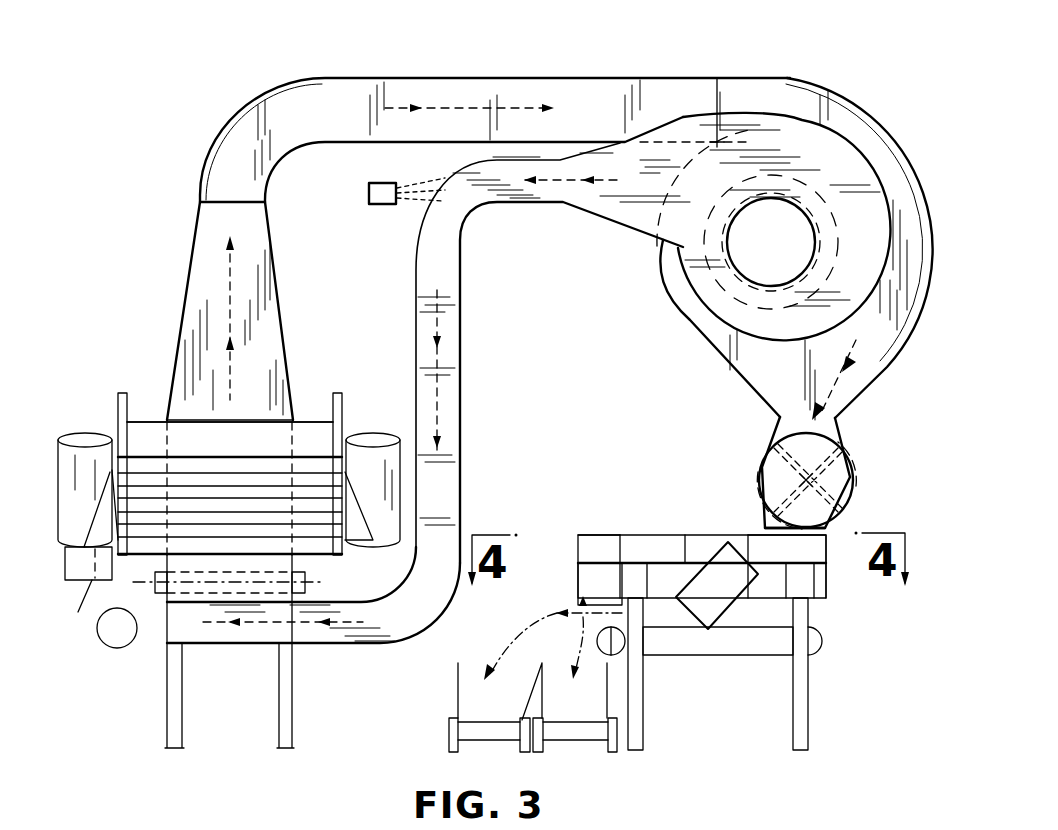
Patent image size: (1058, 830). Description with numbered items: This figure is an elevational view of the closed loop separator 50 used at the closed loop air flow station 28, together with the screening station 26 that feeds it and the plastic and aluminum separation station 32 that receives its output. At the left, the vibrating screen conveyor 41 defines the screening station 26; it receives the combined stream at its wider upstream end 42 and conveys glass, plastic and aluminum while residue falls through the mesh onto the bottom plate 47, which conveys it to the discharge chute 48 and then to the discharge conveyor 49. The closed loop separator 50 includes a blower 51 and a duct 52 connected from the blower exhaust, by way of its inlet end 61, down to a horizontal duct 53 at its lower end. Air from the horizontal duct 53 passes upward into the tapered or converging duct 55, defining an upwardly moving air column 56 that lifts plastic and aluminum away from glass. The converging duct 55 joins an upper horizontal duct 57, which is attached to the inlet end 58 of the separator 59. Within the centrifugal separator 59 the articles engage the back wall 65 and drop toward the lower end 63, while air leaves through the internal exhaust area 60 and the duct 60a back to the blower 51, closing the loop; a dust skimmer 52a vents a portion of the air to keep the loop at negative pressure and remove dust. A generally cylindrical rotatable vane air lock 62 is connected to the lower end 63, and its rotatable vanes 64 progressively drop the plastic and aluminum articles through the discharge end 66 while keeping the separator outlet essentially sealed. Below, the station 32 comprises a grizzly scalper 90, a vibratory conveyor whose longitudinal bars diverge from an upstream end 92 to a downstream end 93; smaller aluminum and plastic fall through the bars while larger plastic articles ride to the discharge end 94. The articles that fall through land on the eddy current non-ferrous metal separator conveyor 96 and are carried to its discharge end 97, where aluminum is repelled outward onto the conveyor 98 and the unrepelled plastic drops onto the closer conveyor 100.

The closed loop separator 50 is at (566, 28).
The upper horizontal duct 57 is at (595, 95).
The inlet end 58 is at (720, 82).
The separator 59 is at (862, 94).
The back wall 65 is at (887, 132).
The blower 51 is at (802, 168).
The internal exhaust area 60 is at (784, 273).
The duct 60a is at (842, 238).
The inlet end 61 is at (650, 213).
The duct 52 is at (456, 345).
The dust skimmer 52a is at (385, 205).
The upwardly moving air column 56 is at (228, 284).
The tapered or converging duct 55 is at (270, 335).
The screening station 26 is at (312, 400).
The upstream end 42 is at (243, 397).
The vibrating screen conveyor 41 is at (322, 437).
The bottom plate 47 is at (230, 497).
The closed loop air flow station 28 is at (312, 567).
The discharge chute 48 is at (50, 597).
The discharge conveyor 49 is at (95, 604).
The horizontal duct 53 is at (343, 640).
The lower end 63 is at (780, 417).
The rotatable vane air lock 62 is at (866, 454).
The rotatable vanes 64 is at (857, 473).
The discharge end 66 is at (837, 527).
The plastic and aluminum separation station 32 is at (700, 500).
The grizzly scalper 90 is at (662, 507).
The downstream end 93 is at (618, 533).
The discharge end 94 is at (587, 592).
The upstream end 92 is at (826, 556).
The eddy current non-ferrous metal separator conveyor 96 is at (755, 635).
The discharge end 97 is at (612, 645).
The conveyor 98 is at (494, 725).
The conveyor 100 is at (573, 723).